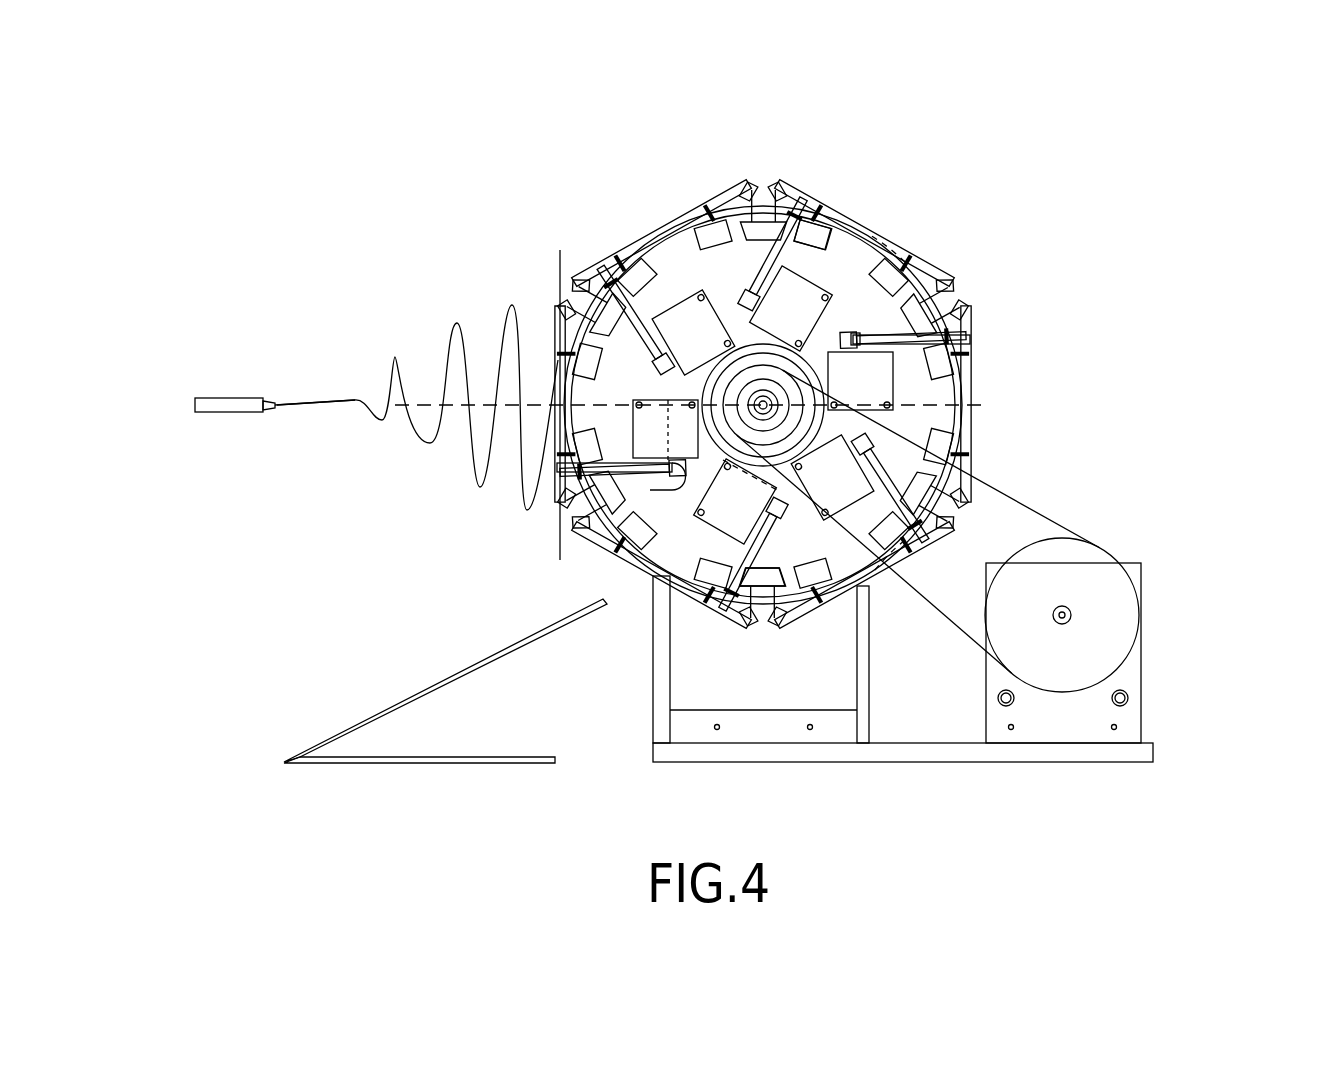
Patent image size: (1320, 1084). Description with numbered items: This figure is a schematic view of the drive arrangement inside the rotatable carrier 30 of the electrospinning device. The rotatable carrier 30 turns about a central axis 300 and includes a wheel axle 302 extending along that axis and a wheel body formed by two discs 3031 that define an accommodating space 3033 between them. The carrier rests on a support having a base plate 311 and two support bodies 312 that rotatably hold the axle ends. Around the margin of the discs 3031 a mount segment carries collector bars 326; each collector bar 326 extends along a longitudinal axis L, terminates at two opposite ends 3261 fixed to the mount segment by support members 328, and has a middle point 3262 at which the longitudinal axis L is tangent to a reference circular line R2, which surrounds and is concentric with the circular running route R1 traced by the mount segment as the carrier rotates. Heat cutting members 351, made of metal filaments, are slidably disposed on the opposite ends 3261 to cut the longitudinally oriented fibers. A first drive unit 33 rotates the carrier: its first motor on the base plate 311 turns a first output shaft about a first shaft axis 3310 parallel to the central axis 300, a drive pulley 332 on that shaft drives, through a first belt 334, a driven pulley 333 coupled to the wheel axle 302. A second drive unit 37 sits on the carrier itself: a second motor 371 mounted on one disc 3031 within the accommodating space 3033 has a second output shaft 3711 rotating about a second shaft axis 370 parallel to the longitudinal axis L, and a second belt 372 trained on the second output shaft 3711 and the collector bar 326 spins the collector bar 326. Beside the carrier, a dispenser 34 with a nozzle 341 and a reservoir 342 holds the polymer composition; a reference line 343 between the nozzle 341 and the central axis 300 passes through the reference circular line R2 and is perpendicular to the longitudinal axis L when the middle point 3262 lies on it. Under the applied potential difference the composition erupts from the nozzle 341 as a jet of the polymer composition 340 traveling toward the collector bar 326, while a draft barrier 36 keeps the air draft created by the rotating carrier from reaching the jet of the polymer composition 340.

The rotatable carrier 30 is at (1030, 362).
The collector bar 326 is at (638, 212).
The opposite ends 3261 is at (730, 190).
The middle point 3262 is at (665, 215).
The support member 328 is at (790, 185).
The heat cutting member 351 is at (828, 222).
The second output shaft 3711 is at (770, 610).
The disc 3031 is at (935, 400).
The accommodating space 3033 is at (907, 372).
The wheel axle 302 is at (748, 345).
The central axis 300 is at (720, 395).
The driven pulley 333 is at (797, 368).
The first belt 334 is at (1020, 500).
The first drive unit 33 is at (1140, 548).
The drive pulley 332 is at (1130, 620).
The first shaft axis 3310 is at (1068, 622).
The base plate 311 is at (1120, 755).
The support body 312 is at (778, 690).
The second drive unit 37 is at (775, 513).
The second shaft axis 370 is at (547, 452).
The second motor 371 is at (690, 460).
The second belt 372 is at (641, 455).
The jet of the polymer composition 340 is at (428, 322).
The dispenser 34 is at (230, 380).
The nozzle 341 is at (270, 395).
The reservoir 342 is at (217, 415).
The reference line 343 is at (330, 415).
The draft barrier 36 is at (385, 705).
The longitudinal axis L is at (560, 262).
The circular running route R1 is at (875, 570).
The reference circular line R2 is at (905, 262).